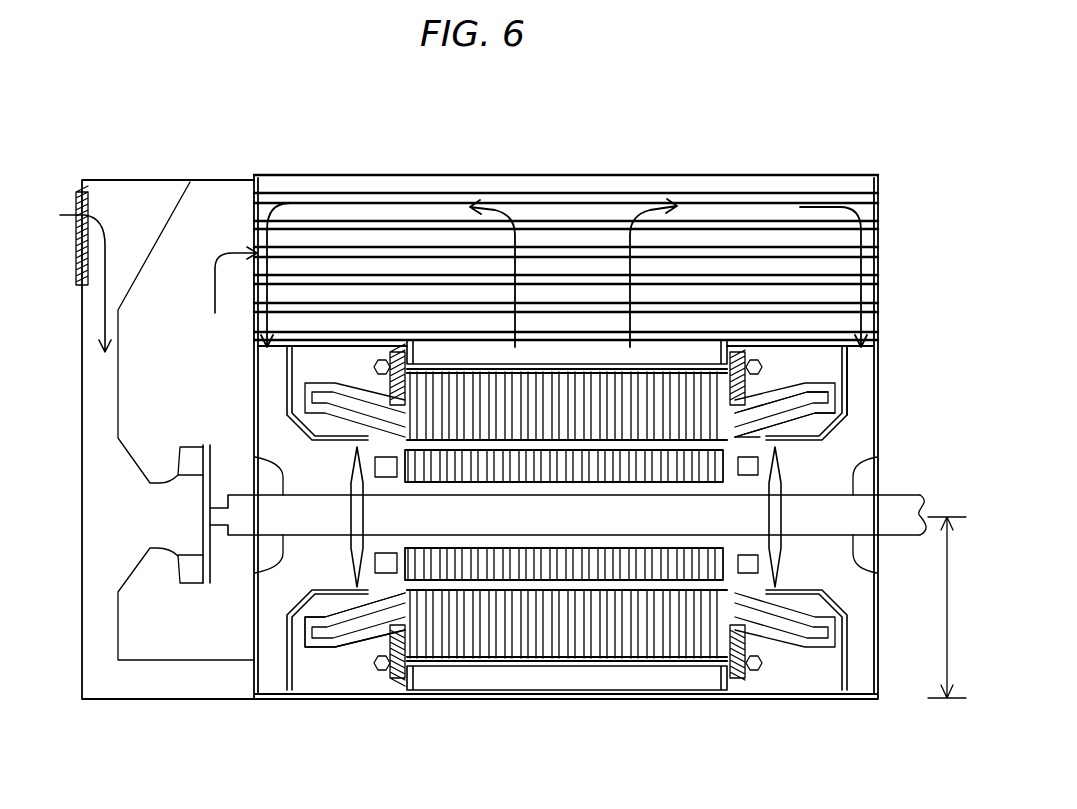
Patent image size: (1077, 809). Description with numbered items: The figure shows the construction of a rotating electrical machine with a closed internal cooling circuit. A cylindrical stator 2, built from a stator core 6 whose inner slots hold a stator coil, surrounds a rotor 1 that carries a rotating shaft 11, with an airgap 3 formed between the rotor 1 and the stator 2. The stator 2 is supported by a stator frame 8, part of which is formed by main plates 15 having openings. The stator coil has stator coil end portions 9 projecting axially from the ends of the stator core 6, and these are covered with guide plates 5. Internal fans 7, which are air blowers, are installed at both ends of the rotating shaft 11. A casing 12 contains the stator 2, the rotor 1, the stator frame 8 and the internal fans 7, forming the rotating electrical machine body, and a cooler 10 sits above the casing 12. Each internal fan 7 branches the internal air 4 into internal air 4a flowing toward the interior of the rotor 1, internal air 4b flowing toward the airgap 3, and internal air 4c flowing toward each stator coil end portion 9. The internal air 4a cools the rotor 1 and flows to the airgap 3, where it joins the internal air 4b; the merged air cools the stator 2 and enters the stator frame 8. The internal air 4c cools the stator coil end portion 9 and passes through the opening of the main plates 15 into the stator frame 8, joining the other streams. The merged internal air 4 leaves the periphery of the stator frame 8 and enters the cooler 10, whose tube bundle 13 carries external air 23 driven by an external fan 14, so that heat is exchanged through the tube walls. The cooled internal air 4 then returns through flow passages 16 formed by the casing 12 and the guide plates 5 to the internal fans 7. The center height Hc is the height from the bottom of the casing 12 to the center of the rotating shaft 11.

The rotor 1 is at (470, 600).
The stator 2 is at (520, 643).
The airgap 3 is at (407, 443).
The internal air 4 is at (800, 210).
The internal air flowing toward the interior of the rotor 4a is at (740, 490).
The internal air flowing toward the airgap 4b is at (763, 449).
The internal air flowing toward the stator coil end portion 4c is at (752, 413).
The guide plate 5 is at (278, 650).
The stator core 6 is at (725, 643).
The internal fan 7 is at (350, 562).
The stator frame 8 is at (652, 346).
The stator coil end portion 9 is at (308, 642).
The cooler 10 is at (573, 176).
The rotating shaft 11 is at (812, 527).
The casing 12 is at (876, 362).
The tube bundle 13 is at (350, 223).
The external fan 14 is at (196, 455).
The main plate 15 is at (428, 346).
The flow passage 16 is at (862, 388).
The external air 23 is at (232, 252).
The center height Hc is at (941, 607).